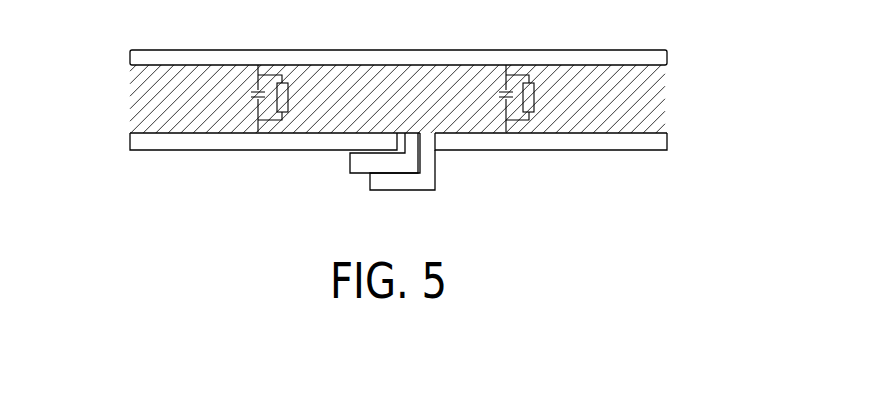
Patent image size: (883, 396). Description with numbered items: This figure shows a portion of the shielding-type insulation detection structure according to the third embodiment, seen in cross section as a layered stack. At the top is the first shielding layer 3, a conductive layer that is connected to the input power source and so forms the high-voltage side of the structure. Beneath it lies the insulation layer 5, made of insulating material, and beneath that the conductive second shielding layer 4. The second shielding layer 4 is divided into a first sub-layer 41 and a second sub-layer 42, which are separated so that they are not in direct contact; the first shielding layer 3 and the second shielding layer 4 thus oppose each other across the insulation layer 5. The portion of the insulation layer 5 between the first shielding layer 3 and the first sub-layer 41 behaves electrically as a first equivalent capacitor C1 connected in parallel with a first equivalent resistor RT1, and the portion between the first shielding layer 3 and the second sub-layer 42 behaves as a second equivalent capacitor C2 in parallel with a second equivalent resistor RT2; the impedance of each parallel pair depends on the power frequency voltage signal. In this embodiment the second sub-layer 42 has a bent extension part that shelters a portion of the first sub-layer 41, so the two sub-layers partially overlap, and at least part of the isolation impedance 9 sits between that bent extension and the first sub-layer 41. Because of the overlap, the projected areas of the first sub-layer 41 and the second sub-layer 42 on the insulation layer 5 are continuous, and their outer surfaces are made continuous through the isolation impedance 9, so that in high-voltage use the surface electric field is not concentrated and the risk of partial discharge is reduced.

The first shielding layer 3 is at (605, 52).
The insulation layer 5 is at (650, 95).
The second shielding layer 4 is at (488, 139).
The first sub-layer 41 is at (175, 143).
The second sub-layer 42 is at (615, 144).
The isolation impedance 9 is at (357, 160).
The first equivalent capacitor C1 is at (241, 98).
The first equivalent resistor RT1 is at (297, 97).
The second equivalent capacitor C2 is at (487, 98).
The second equivalent resistor RT2 is at (546, 97).